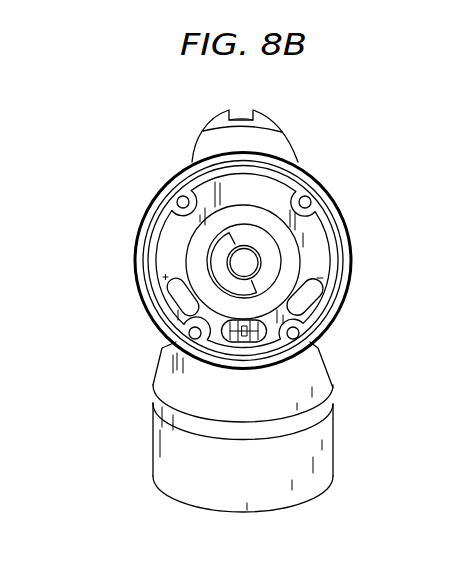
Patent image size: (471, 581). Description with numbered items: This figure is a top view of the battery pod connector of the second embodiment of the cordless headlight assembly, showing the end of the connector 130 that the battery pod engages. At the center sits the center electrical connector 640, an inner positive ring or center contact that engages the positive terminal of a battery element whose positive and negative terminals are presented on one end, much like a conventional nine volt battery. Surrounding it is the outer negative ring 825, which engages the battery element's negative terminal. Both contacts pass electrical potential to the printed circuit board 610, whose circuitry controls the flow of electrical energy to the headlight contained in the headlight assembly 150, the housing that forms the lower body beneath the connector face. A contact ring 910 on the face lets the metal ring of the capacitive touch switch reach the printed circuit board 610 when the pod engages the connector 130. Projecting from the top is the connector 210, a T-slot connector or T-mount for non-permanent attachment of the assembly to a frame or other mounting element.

The connector 130 is at (343, 217).
The connector 210 is at (270, 118).
The printed circuit board 610 is at (177, 243).
The contact ring 910 is at (168, 308).
The outer negative ring 825 is at (258, 217).
The center electrical connector 640 is at (247, 267).
The headlight assembly 150 is at (203, 485).